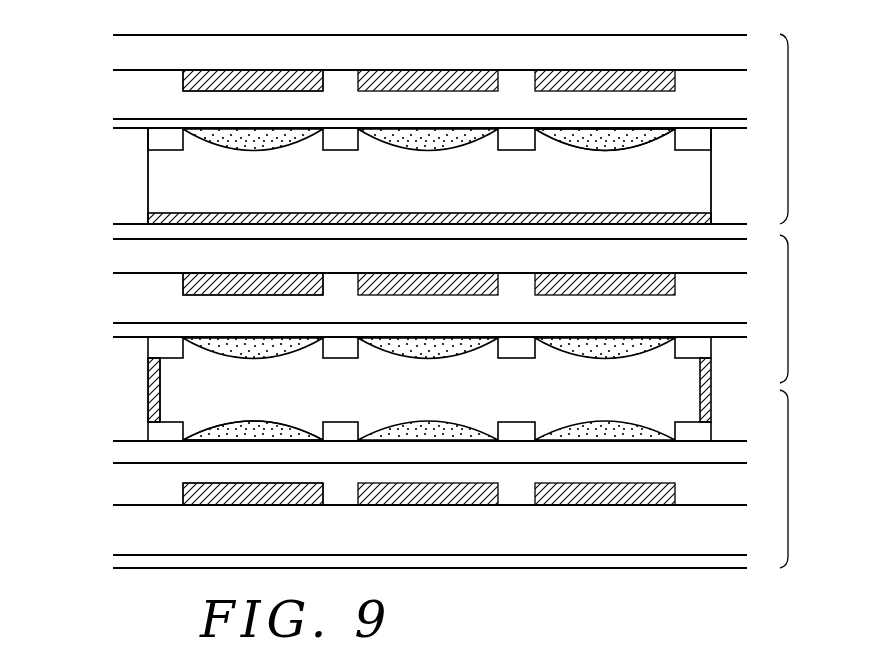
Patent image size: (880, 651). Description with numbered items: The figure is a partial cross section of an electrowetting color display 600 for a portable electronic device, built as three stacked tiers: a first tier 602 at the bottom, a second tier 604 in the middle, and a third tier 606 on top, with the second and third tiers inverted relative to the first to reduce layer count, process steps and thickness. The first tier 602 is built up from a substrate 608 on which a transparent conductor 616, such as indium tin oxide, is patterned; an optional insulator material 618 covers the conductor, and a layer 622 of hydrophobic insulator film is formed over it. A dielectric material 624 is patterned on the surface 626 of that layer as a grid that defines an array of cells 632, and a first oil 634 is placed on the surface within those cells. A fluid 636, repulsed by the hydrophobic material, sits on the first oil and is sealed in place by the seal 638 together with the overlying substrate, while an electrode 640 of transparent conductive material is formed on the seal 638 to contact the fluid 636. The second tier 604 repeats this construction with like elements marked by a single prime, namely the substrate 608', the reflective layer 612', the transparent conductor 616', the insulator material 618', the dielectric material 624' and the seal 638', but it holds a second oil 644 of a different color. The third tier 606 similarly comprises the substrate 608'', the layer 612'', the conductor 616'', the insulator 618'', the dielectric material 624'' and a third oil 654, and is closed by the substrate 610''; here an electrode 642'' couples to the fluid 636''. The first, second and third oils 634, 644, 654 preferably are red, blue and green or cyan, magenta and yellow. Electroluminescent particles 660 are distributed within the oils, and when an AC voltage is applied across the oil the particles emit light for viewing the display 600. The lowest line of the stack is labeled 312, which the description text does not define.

The color display 600 is at (118, 618).
The first tier 602 is at (807, 479).
The second tier 604 is at (807, 309).
The third tier 606 is at (807, 129).
The substrate 608 is at (397, 538).
The substrate 608' is at (396, 252).
The substrate 608'' is at (397, 46).
The substrate 610'' is at (394, 224).
The white reflective backplane 612' is at (401, 324).
The white reflective backplane 612'' is at (398, 117).
The transparent conductor 616 is at (235, 510).
The transparent conductor 616' is at (228, 296).
The transparent conductor 616'' is at (228, 91).
The insulator material 618 is at (401, 489).
The insulator material 618' is at (397, 285).
The insulator material 618'' is at (398, 82).
The hydrophobic film layer 622 is at (120, 455).
The dielectric material 624 is at (396, 427).
The dielectric material 624' is at (383, 346).
The dielectric material 624'' is at (379, 140).
The surface 626 is at (232, 440).
The cells 632 is at (262, 412).
The first oil 634 is at (283, 428).
The fluid 636 is at (718, 387).
The fluid 636'' is at (732, 176).
The seal 638 is at (107, 390).
The seal 638' is at (97, 176).
The electrode 640 is at (155, 412).
The electrode 642'' is at (429, 201).
The second oil 644 is at (235, 358).
The third oil 654 is at (236, 144).
The electroluminescent particles 660 is at (614, 138).
The backlight layer 312 is at (692, 562).